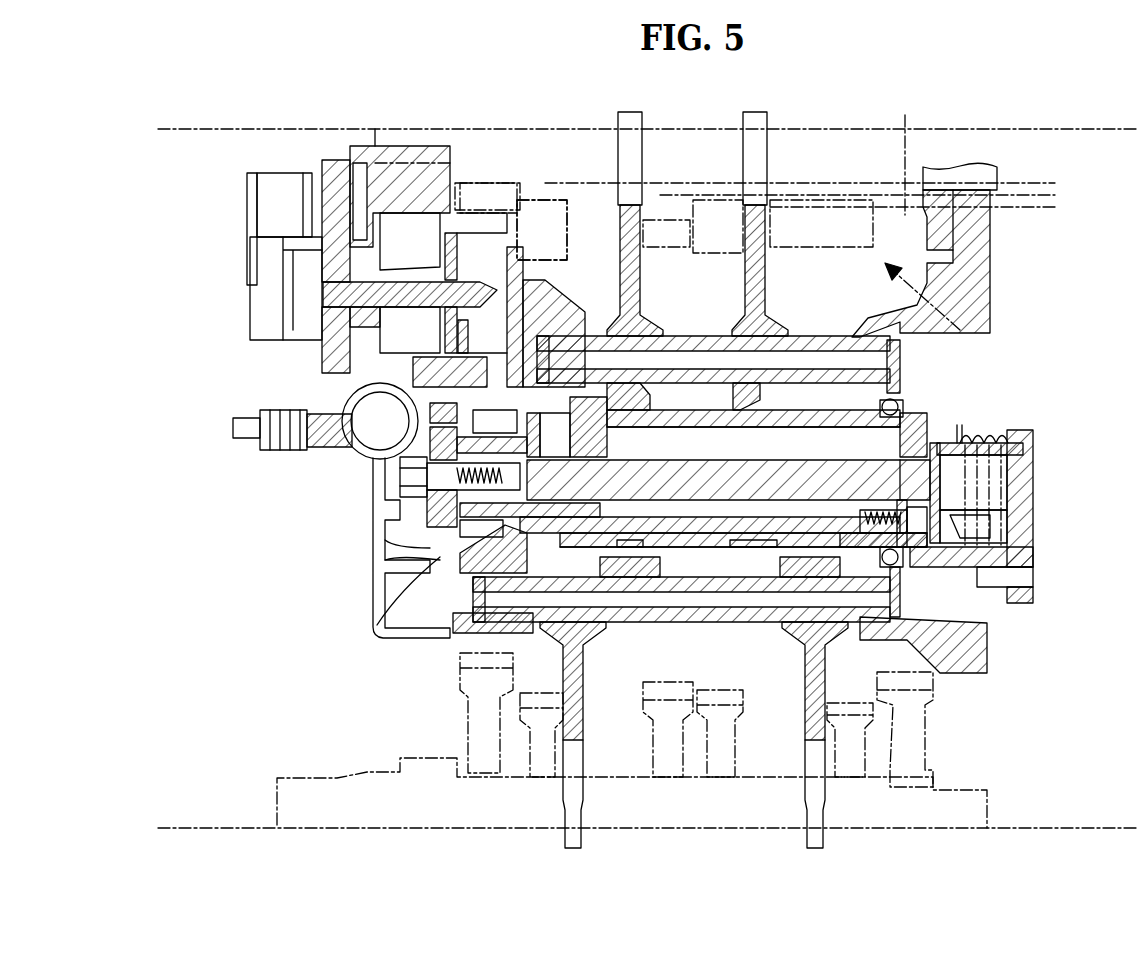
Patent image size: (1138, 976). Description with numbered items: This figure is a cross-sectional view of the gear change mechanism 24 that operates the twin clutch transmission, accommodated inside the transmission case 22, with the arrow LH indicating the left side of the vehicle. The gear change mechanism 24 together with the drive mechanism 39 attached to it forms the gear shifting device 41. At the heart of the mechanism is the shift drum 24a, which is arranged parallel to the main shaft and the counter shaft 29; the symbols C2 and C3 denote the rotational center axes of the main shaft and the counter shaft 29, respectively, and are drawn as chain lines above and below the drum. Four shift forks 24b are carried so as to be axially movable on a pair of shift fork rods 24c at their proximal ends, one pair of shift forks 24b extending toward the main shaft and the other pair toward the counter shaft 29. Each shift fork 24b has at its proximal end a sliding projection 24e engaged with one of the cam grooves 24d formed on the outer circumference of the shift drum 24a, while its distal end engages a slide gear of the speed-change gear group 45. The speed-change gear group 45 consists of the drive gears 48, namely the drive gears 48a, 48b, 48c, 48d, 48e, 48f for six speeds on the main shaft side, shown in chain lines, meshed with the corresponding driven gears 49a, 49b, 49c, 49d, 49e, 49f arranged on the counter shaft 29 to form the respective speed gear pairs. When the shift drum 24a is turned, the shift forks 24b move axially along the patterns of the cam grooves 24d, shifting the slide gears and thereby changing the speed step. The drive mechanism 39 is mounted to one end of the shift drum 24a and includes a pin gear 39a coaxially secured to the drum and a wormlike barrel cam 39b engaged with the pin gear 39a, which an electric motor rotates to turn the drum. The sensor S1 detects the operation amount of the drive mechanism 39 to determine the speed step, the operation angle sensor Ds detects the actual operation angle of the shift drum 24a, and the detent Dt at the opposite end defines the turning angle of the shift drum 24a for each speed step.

The transmission case 22 is at (354, 143).
The gear change mechanism 24 is at (692, 451).
The shift drum 24a is at (684, 545).
The shift forks 24b is at (625, 215).
The shift fork rods 24c is at (712, 343).
The cam grooves 24d is at (625, 392).
The sliding projection 24e is at (660, 390).
The counter shaft 29 is at (960, 790).
The drive mechanism 39 is at (326, 474).
The pin gear 39a is at (395, 602).
The barrel cam 39b is at (363, 456).
The gear shifting device 41 is at (318, 565).
The speed-change gear group 45 is at (960, 332).
The rocker arm 48 is at (1030, 200).
The drive gear 48a is at (485, 200).
The drive gear 48b is at (914, 145).
The drive gear 48c is at (670, 222).
The drive gear 48d is at (717, 238).
The drive gear 48e is at (545, 238).
The drive gear 48f is at (852, 232).
The driven gear 49a is at (458, 670).
The driven gear 49b is at (920, 690).
The driven gear 49c is at (665, 705).
The driven gear 49d is at (727, 712).
The driven gear 49e is at (548, 720).
The driven gear 49f is at (850, 720).
The rotational center axis of the main shaft C2 is at (1078, 140).
The rotational center axis of the counter shaft C3 is at (1020, 826).
The operation angle sensor Ds is at (263, 306).
The detent Dt is at (1033, 553).
The sensor S1 is at (272, 404).
The arrow denoting the left of the vehicle LH is at (245, 502).